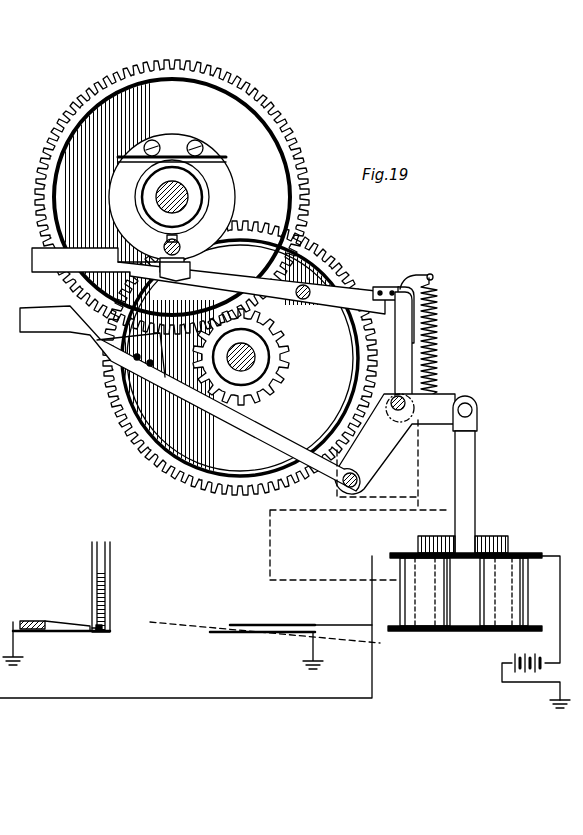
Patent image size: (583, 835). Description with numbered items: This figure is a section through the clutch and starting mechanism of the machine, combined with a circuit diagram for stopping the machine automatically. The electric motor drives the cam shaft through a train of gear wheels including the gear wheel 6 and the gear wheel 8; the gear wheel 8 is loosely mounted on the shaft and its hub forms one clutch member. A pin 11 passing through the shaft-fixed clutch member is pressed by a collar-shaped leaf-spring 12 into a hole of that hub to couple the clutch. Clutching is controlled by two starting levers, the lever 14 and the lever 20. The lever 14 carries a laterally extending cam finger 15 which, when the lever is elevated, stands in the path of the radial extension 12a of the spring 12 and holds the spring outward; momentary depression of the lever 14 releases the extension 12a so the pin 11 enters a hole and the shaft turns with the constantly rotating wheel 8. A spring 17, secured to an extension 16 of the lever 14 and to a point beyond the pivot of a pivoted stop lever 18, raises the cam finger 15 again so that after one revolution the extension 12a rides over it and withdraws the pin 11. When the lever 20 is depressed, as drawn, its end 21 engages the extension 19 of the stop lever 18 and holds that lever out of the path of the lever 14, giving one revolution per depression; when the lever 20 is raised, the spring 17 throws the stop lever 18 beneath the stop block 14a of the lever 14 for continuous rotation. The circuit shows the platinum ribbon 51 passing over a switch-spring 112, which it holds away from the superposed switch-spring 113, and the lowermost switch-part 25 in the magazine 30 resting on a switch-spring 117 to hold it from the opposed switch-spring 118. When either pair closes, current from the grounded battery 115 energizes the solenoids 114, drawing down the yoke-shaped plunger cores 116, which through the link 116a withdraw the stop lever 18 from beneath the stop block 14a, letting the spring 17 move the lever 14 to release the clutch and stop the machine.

The gear wheel 8 is at (277, 112).
The leaf-spring 12 is at (233, 191).
The pin 11 is at (183, 250).
The radial extension of the spring 12a is at (188, 266).
The cam finger 15 is at (180, 280).
The starting lever 14 is at (44, 273).
The stop block 14a is at (398, 288).
The extension of the lever 16 is at (426, 273).
The spring 17 is at (438, 341).
The stop lever 18 is at (400, 358).
The extension of the stop lever 19 is at (372, 433).
The starting lever 20 is at (62, 333).
The end of the lever 21 is at (362, 471).
The gear wheel 6 is at (198, 478).
The link 116a is at (476, 492).
The plunger core 116 is at (498, 535).
The solenoid 114 is at (487, 633).
The battery 115 is at (516, 673).
The switch-spring 113 is at (277, 624).
The switch-spring 112 is at (251, 635).
The platinum ribbon 51 is at (187, 626).
The magazine 30 is at (111, 559).
The switch-spring 118 is at (58, 622).
The switch-spring 117 is at (68, 633).
The switch-part 25 is at (98, 634).